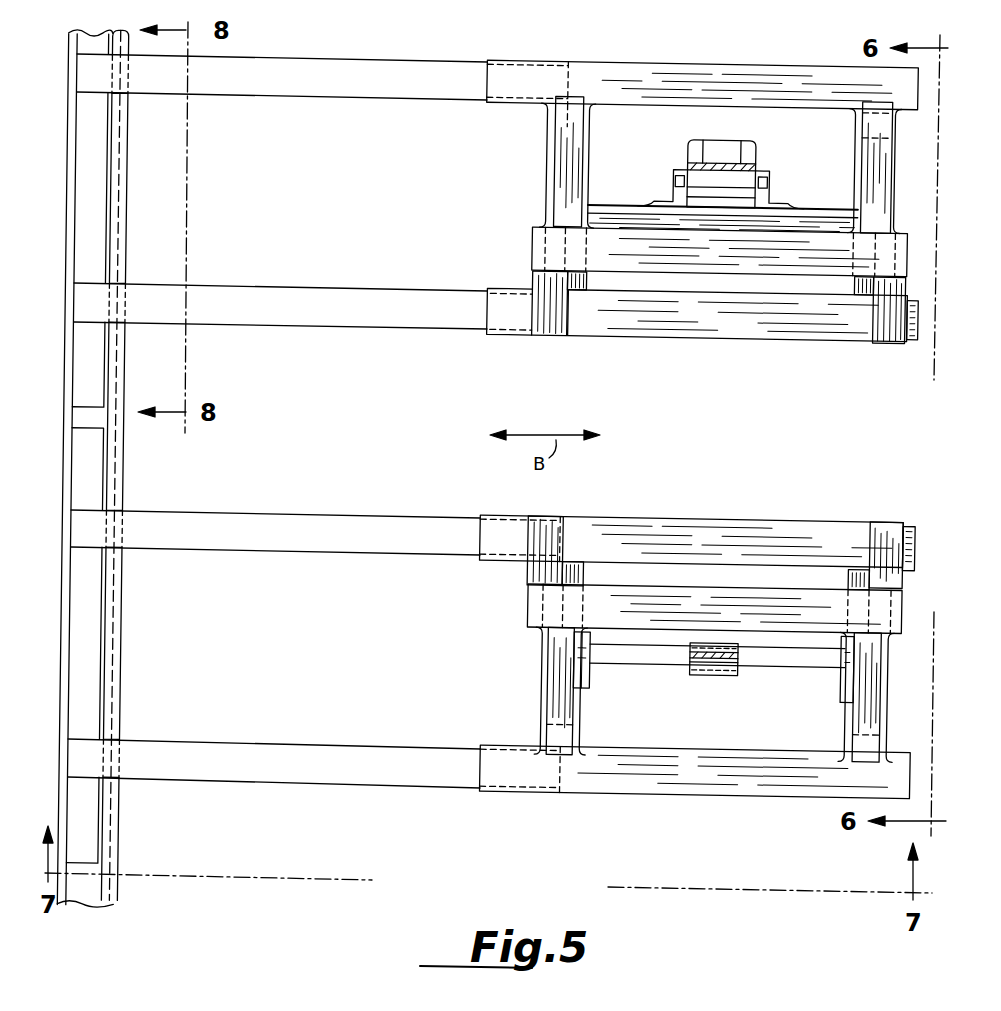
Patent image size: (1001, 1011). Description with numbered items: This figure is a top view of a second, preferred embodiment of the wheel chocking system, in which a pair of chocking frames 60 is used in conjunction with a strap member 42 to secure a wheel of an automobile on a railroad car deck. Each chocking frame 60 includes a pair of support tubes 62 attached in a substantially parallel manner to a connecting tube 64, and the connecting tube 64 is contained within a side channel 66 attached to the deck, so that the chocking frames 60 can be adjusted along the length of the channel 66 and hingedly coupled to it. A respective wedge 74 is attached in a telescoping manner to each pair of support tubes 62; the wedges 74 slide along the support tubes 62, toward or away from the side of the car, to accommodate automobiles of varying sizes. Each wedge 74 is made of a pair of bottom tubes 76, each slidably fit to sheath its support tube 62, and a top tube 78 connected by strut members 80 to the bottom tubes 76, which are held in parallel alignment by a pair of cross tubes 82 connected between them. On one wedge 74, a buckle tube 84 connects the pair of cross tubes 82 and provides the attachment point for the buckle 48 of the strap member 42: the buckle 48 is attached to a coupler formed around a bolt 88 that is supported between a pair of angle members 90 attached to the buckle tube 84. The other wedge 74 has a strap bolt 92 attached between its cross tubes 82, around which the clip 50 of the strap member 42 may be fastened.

The strap member 42 is at (697, 163).
The buckle 48 is at (745, 147).
The clip 50 is at (697, 675).
The chocking frame 60 is at (277, 461).
The support tube 62 is at (347, 73).
The connecting tube 64 is at (93, 357).
The side channel 66 is at (118, 655).
The wedge 74 is at (727, 355).
The bottom tube 76 is at (625, 75).
The top tube 78 is at (540, 237).
The strut member 80 is at (569, 137).
The cross tube 82 is at (550, 170).
The buckle tube 84 is at (613, 217).
The bolt 88 is at (745, 183).
The angle member 90 is at (667, 203).
The strap bolt 92 is at (640, 658).